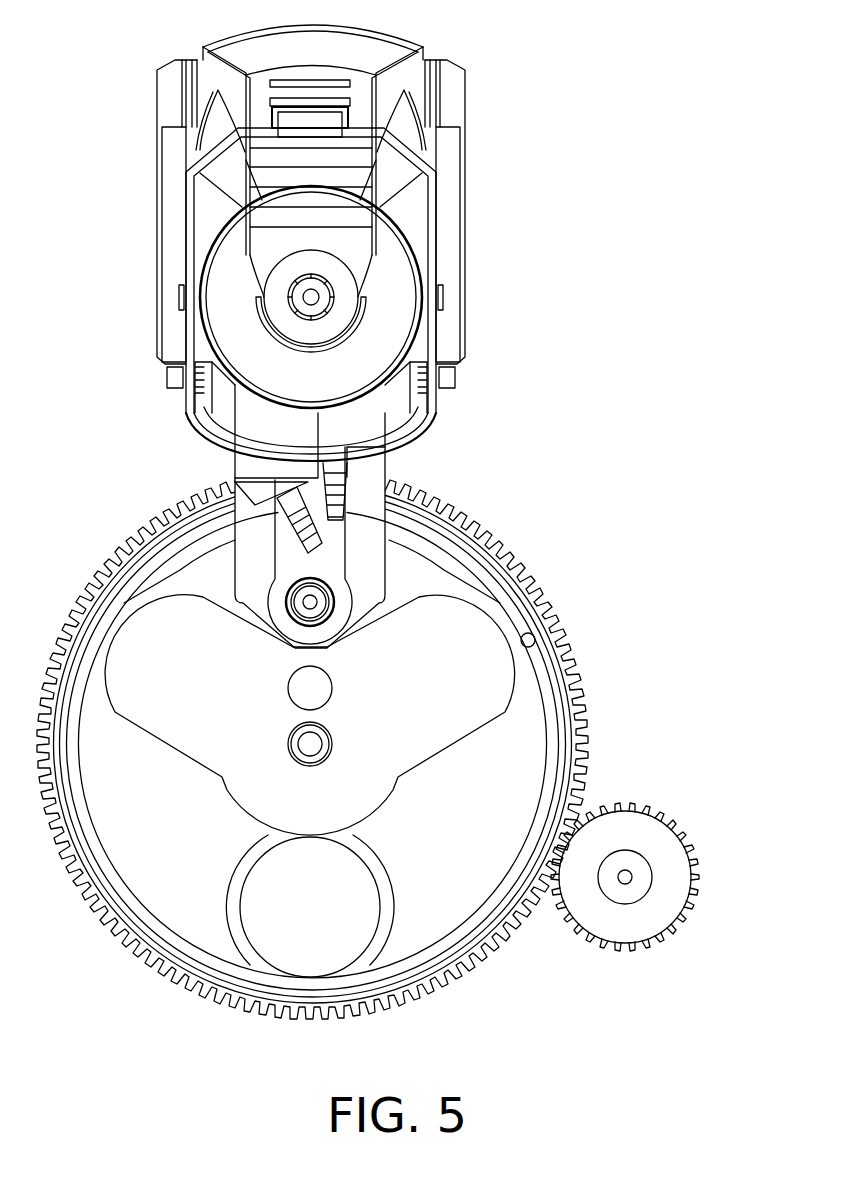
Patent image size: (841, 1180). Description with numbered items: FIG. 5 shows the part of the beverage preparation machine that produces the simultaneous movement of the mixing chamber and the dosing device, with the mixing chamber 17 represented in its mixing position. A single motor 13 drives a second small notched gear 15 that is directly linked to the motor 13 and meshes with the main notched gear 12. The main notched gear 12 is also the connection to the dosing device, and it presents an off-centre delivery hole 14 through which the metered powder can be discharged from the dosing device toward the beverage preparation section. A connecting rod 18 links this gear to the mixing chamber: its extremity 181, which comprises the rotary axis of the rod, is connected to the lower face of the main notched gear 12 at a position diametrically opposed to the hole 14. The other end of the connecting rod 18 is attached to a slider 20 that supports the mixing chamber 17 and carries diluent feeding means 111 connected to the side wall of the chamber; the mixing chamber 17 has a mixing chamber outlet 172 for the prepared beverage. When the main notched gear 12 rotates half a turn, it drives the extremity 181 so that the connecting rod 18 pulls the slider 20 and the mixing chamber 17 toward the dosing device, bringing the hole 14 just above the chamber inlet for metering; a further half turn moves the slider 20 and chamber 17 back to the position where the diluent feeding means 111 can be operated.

The slider 20 is at (457, 93).
The mixing chamber outlet 172 is at (337, 290).
The mixing chamber 17 is at (390, 312).
The connecting rod 18 is at (370, 510).
The connecting rod extremity comprising the rotary axis 181 is at (322, 604).
The diluent feeding means 111 is at (233, 500).
The main notched gear 12 is at (152, 890).
The delivery hole 14 is at (313, 960).
The motor 13 is at (678, 866).
The second notched gear 15 is at (640, 803).